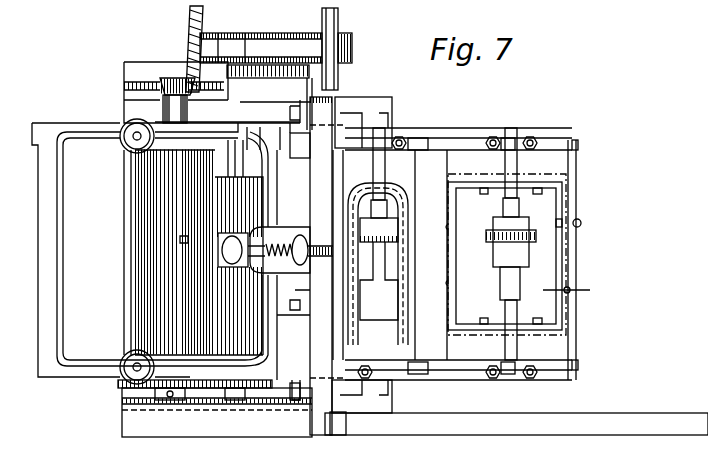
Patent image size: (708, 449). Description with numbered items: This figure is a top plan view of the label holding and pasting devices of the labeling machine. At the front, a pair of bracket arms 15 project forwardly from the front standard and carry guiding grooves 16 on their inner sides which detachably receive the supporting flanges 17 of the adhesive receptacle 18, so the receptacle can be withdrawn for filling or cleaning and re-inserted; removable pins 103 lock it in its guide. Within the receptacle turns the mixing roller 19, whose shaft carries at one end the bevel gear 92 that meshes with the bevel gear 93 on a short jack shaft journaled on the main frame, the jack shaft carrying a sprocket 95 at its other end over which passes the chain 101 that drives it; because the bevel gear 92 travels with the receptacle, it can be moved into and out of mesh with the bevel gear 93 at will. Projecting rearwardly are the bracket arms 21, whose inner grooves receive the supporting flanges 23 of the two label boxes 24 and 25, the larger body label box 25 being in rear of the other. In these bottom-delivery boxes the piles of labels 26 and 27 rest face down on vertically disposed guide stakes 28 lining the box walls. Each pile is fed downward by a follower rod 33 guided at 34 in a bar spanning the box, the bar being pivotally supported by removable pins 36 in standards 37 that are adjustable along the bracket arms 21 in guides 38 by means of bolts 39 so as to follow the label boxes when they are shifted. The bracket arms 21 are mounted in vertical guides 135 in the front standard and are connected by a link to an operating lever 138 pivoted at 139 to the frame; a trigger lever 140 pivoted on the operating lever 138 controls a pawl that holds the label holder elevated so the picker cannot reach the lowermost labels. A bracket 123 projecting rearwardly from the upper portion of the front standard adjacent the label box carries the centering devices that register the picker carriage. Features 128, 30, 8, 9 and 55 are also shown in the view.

The bevel gear 93 is at (190, 9).
The chain 101 is at (336, 24).
The sprocket 95 is at (346, 46).
The bevel gear 92 is at (166, 80).
The bracket arms 15 is at (217, 249).
The bearing block 128 is at (300, 142).
The vertical guides 135 is at (356, 112).
The bolts 39 is at (400, 135).
The guides 38 is at (422, 137).
The bracket arms 21 is at (455, 137).
The standards 37 is at (506, 135).
The removable pins 36 is at (531, 135).
The supporting flanges 23 is at (425, 244).
The pile of labels 26 is at (396, 207).
The label box 24 is at (406, 224).
The pile of labels 27 is at (568, 200).
The label box 25 is at (570, 219).
The pin 30 is at (581, 223).
The guide stakes 28 is at (583, 238).
The rod 8 is at (516, 270).
The guide 34 is at (520, 267).
The follower rod 33 is at (508, 277).
The section line 9 is at (566, 289).
The trigger lever 140 is at (309, 241).
The operating lever 138 is at (220, 250).
The mixing roller 19 is at (191, 251).
The adhesive receptacle 18 is at (166, 249).
The pivot 139 is at (300, 306).
The removable pins 103 is at (128, 407).
The guiding grooves 16 is at (172, 412).
The supporting flanges 17 is at (210, 397).
The plate 55 is at (290, 382).
The bracket 123 is at (516, 424).